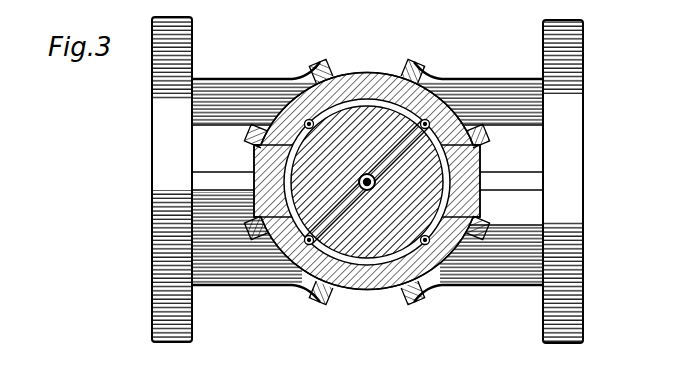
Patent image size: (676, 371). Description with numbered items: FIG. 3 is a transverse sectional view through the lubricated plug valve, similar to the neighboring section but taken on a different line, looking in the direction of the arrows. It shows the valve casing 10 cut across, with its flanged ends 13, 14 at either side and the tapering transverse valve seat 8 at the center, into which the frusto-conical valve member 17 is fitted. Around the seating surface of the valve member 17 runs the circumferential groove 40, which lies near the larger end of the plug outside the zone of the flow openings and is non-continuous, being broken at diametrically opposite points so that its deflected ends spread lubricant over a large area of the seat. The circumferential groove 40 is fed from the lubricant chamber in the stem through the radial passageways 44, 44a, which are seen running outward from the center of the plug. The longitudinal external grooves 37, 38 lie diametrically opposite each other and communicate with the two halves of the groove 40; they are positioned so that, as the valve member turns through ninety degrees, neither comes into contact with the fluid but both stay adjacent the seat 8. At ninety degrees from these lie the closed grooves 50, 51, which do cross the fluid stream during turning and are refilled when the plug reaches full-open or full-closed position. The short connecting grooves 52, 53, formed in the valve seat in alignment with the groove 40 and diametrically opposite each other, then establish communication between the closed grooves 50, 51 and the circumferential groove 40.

The valve seat 8 is at (257, 149).
The valve casing 10 is at (297, 112).
The left flange 13 is at (193, 332).
The right flange 14 is at (583, 268).
The valve member 17 is at (385, 240).
The longitudinal external groove 37 is at (258, 206).
The longitudinal external groove 38 is at (482, 157).
The circumferential groove 40 is at (361, 98).
The radial passageway 44 is at (293, 288).
The radial passageway 44a is at (389, 128).
The closed groove 50 is at (309, 119).
The closed groove 51 is at (432, 296).
The connecting groove 52 is at (274, 284).
The connecting groove 53 is at (427, 110).